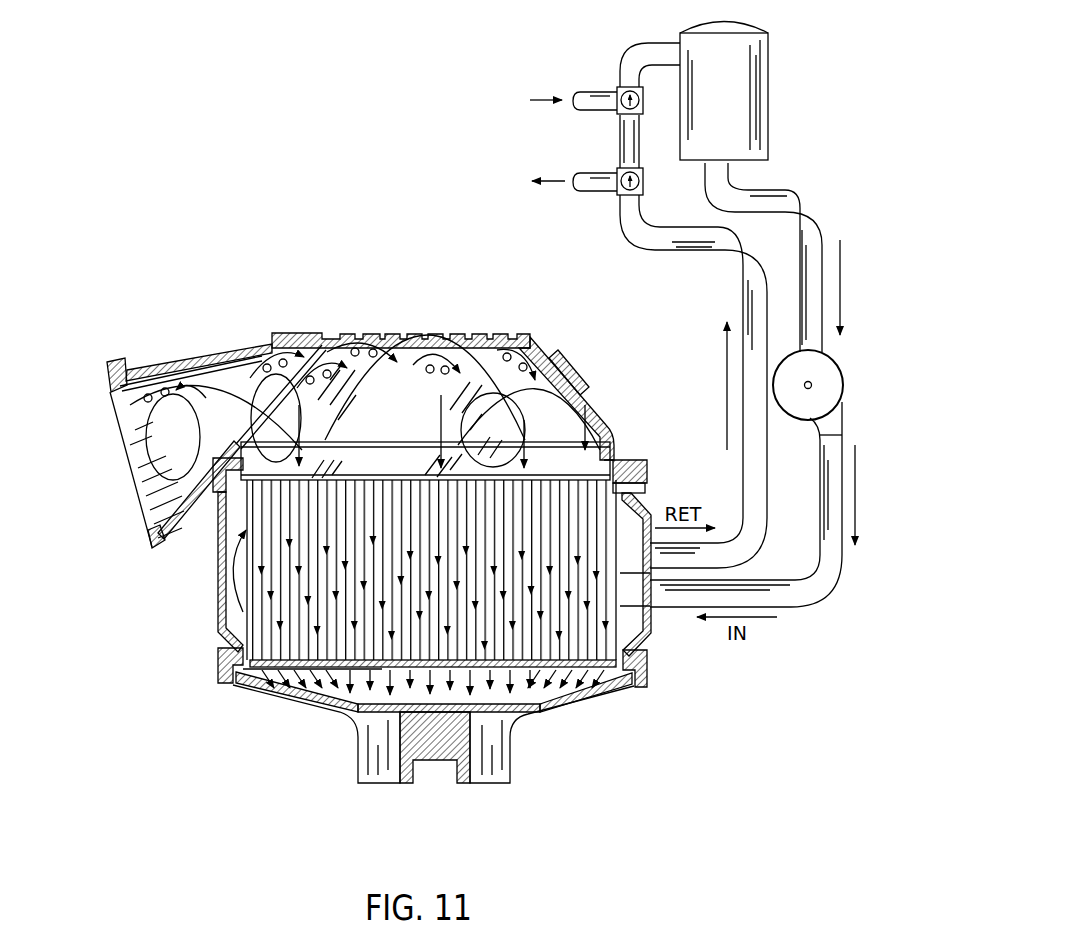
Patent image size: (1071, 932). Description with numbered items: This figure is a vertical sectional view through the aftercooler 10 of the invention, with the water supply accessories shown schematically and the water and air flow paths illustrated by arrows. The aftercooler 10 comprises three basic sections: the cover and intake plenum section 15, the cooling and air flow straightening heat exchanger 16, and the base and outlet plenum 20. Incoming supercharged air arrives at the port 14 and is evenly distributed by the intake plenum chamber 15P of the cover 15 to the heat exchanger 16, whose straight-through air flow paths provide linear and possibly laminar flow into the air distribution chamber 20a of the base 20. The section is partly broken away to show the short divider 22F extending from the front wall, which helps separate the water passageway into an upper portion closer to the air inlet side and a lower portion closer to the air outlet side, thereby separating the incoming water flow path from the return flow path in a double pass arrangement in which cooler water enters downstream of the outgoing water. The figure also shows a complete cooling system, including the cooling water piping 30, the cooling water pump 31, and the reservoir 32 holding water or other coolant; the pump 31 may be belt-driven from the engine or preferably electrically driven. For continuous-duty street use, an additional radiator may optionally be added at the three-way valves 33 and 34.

The aftercooler 10 is at (287, 333).
The port 14 is at (115, 396).
The cover and intake plenum section 15 is at (390, 338).
The intake plenum chamber 15P is at (589, 455).
The heat exchanger 16 is at (226, 592).
The base and outlet plenum 20 is at (358, 734).
The air distribution chamber 20a is at (538, 686).
The short divider 22F is at (632, 574).
The cooling water piping 30 is at (805, 188).
The cooling water pump 31 is at (831, 378).
The reservoir 32 is at (760, 81).
The three-way valve 33 is at (644, 182).
The three-way valve 34 is at (618, 82).